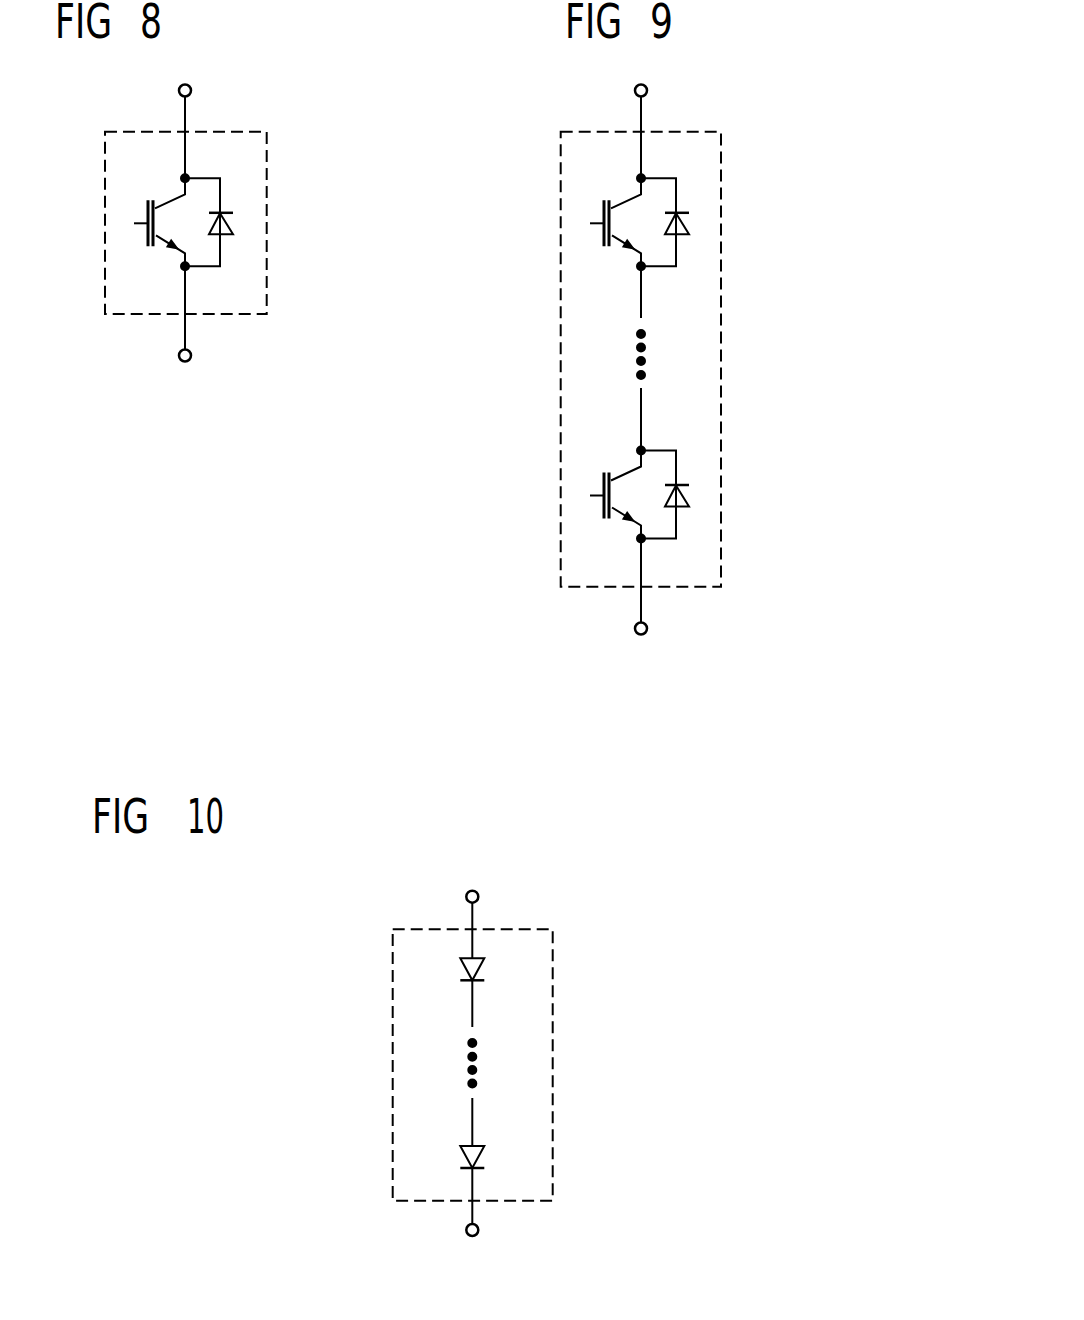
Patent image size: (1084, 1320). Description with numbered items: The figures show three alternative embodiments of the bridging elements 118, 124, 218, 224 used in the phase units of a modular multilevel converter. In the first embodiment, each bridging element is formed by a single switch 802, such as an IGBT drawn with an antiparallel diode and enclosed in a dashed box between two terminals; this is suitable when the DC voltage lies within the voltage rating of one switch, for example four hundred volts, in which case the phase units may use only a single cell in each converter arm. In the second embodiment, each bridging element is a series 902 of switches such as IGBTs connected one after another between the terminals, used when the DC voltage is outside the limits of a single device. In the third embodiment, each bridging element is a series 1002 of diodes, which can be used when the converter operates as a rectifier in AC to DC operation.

In FIG. 8, the bridging element 118 is at (266, 223).
In FIG. 9, the bridging element 118 is at (753, 360).
In FIG. 10, the bridging element 118 is at (650, 1063).
In FIG. 8, the bridging element 124 is at (266, 223).
In FIG. 9, the bridging element 124 is at (753, 360).
In FIG. 10, the bridging element 124 is at (650, 1063).
In FIG. 8, the bridging element 218 is at (266, 223).
In FIG. 9, the bridging element 218 is at (753, 360).
In FIG. 10, the bridging element 218 is at (650, 1063).
In FIG. 8, the bridging element 224 is at (266, 223).
In FIG. 9, the bridging element 224 is at (753, 360).
In FIG. 10, the bridging element 224 is at (650, 1063).
In FIG. 8, the single switch 802 is at (222, 255).
In FIG. 9, the series of switches 902 is at (721, 145).
In FIG. 10, the series of diodes 1002 is at (553, 963).